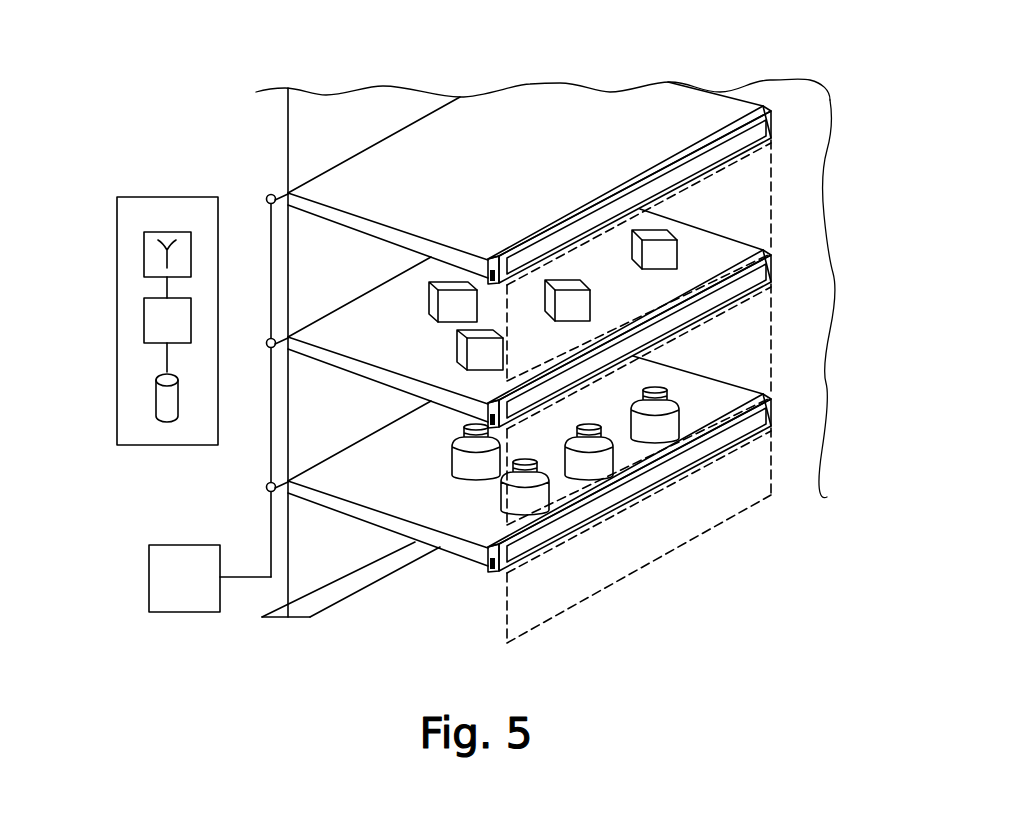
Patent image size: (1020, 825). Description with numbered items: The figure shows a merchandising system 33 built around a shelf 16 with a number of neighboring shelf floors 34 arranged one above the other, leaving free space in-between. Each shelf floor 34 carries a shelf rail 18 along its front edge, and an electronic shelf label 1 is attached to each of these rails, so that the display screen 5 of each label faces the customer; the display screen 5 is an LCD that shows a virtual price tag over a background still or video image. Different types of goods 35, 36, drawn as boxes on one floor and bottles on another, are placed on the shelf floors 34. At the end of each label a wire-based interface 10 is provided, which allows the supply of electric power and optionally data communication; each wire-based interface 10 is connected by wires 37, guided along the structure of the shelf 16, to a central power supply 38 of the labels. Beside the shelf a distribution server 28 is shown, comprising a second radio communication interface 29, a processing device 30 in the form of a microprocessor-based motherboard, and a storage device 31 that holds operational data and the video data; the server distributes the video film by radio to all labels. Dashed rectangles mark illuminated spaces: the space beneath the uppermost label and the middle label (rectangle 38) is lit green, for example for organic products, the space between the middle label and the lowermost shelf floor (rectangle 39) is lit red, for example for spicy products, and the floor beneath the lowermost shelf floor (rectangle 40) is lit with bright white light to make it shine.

The electronic shelf label 1 is at (598, 212).
The display screen 5 is at (670, 180).
The wire-based interface 10 is at (492, 272).
The shelf 16 is at (280, 145).
The shelf rail 18 is at (776, 101).
The distribution server 28 is at (162, 195).
The second radio communication interface 29 is at (150, 256).
The processing device 30 is at (150, 320).
The storage device 31 is at (158, 402).
The merchandising system 33 is at (254, 60).
The shelf floor 34 is at (375, 210).
The goods 35 is at (437, 305).
The goods 36 is at (453, 456).
The wires 37 is at (345, 228).
The central power supply 38 is at (162, 575).
The rectangle 39 is at (771, 322).
The rectangle 40 is at (771, 490).